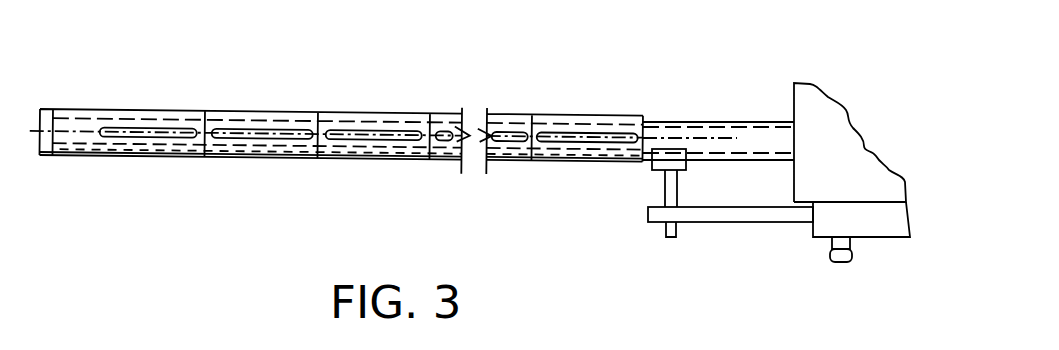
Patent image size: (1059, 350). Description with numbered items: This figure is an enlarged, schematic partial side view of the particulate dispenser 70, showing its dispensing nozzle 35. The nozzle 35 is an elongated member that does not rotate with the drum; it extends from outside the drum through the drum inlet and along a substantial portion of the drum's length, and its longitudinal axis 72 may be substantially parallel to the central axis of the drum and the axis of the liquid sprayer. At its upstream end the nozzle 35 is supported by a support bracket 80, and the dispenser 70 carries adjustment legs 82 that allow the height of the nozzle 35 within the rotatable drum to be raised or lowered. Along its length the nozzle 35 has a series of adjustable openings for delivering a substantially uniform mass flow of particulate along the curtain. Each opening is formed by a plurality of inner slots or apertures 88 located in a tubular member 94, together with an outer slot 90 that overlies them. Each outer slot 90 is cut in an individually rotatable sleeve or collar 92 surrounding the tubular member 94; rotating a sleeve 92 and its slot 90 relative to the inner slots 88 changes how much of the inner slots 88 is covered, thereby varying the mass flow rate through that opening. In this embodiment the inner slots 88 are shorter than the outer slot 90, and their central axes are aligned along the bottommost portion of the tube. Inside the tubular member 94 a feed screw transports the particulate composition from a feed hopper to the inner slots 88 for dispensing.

The particulate dispenser nozzle 35 is at (340, 111).
The particulate dispenser 70 is at (794, 96).
The longitudinal axis 72 is at (88, 131).
The support bracket 80 is at (660, 213).
The adjustment legs 82 is at (828, 256).
The inner slots 88 is at (108, 157).
The outer slot 90 is at (213, 130).
The rotatable sleeve 92 is at (70, 156).
The tubular member 94 is at (53, 113).